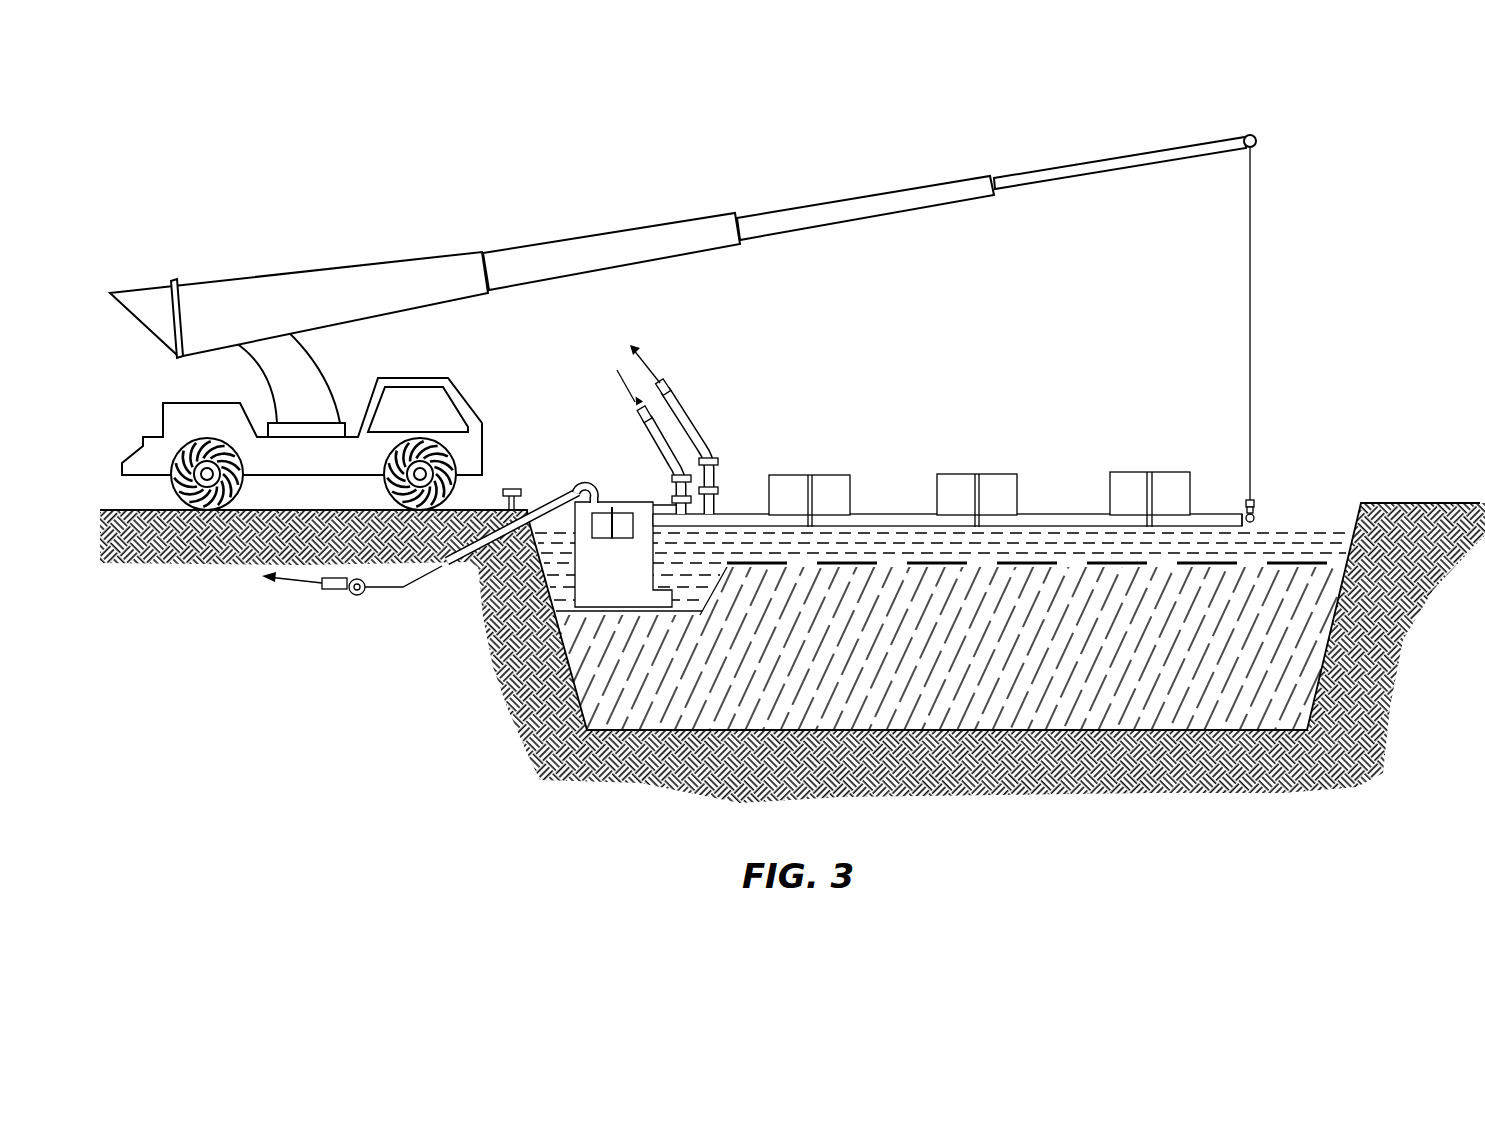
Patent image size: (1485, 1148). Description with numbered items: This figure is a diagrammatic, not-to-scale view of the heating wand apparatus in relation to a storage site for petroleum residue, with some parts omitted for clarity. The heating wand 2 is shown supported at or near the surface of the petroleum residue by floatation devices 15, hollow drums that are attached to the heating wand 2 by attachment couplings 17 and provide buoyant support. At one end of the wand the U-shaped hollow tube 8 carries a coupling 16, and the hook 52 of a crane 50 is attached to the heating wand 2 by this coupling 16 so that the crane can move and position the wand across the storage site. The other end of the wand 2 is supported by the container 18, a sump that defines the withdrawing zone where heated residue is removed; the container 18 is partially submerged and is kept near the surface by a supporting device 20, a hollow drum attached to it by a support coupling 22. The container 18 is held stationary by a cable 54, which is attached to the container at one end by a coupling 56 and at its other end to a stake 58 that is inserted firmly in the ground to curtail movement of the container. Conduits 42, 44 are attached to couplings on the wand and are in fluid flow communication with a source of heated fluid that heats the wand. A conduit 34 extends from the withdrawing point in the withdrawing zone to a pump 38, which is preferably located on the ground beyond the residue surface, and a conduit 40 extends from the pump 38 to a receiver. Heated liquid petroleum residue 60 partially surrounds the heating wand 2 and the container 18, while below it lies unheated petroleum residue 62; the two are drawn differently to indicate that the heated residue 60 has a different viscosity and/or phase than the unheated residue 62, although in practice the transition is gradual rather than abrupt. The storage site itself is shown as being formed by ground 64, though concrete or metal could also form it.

The heating wand 2 is at (915, 503).
The U-shaped hollow tube 8 is at (1249, 520).
The floatation devices 15 is at (842, 474).
The coupling 16 is at (1258, 522).
The attachment coupling 17 is at (809, 475).
The container 18 is at (628, 500).
The supporting device 20 is at (598, 538).
The support coupling 22 is at (613, 538).
The conduit 34 is at (438, 571).
The pump 38 is at (356, 597).
The conduit 40 is at (293, 580).
The conduit 42 is at (642, 425).
The conduit 44 is at (690, 412).
The crane 50 is at (338, 267).
The hook 52 is at (1258, 502).
The cable 54 is at (528, 507).
The coupling 56 is at (563, 525).
The stake 58 is at (510, 488).
The heated liquid petroleum residue 60 is at (943, 566).
The unheated petroleum residue 62 is at (950, 650).
The ground 64 is at (792, 655).